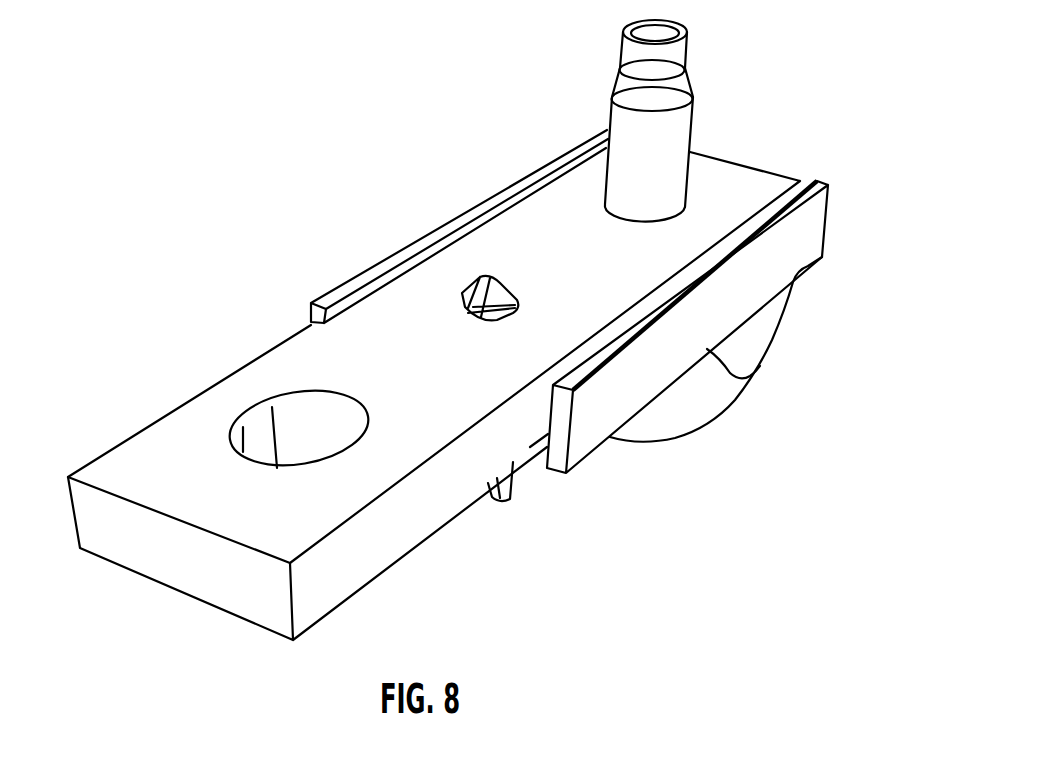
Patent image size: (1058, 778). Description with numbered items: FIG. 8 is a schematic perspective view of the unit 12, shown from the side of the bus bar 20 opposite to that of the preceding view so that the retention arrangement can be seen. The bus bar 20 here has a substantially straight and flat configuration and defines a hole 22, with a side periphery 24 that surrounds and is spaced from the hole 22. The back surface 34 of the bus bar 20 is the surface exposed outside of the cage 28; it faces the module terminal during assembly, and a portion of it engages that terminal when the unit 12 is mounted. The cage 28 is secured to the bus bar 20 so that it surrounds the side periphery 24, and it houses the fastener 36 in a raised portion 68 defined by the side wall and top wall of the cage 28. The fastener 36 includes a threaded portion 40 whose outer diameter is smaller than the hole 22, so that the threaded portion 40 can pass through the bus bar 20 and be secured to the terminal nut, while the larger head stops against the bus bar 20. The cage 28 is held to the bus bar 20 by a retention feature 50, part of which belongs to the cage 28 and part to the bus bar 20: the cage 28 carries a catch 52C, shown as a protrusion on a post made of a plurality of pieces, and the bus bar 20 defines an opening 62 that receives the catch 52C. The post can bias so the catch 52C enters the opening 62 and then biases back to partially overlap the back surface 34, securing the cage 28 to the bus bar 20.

The unit 12 is at (138, 106).
The bus bar 20 is at (143, 444).
The hole 22 is at (263, 427).
The side periphery 24 is at (380, 565).
The cage 28 is at (818, 235).
The back surface 34 is at (217, 391).
The fastener 36 is at (663, 33).
The threaded portion 40 is at (618, 80).
The retention feature 50 is at (469, 229).
The opening 62 is at (480, 313).
The catch 52C is at (510, 289).
The raised portion 68 is at (685, 465).